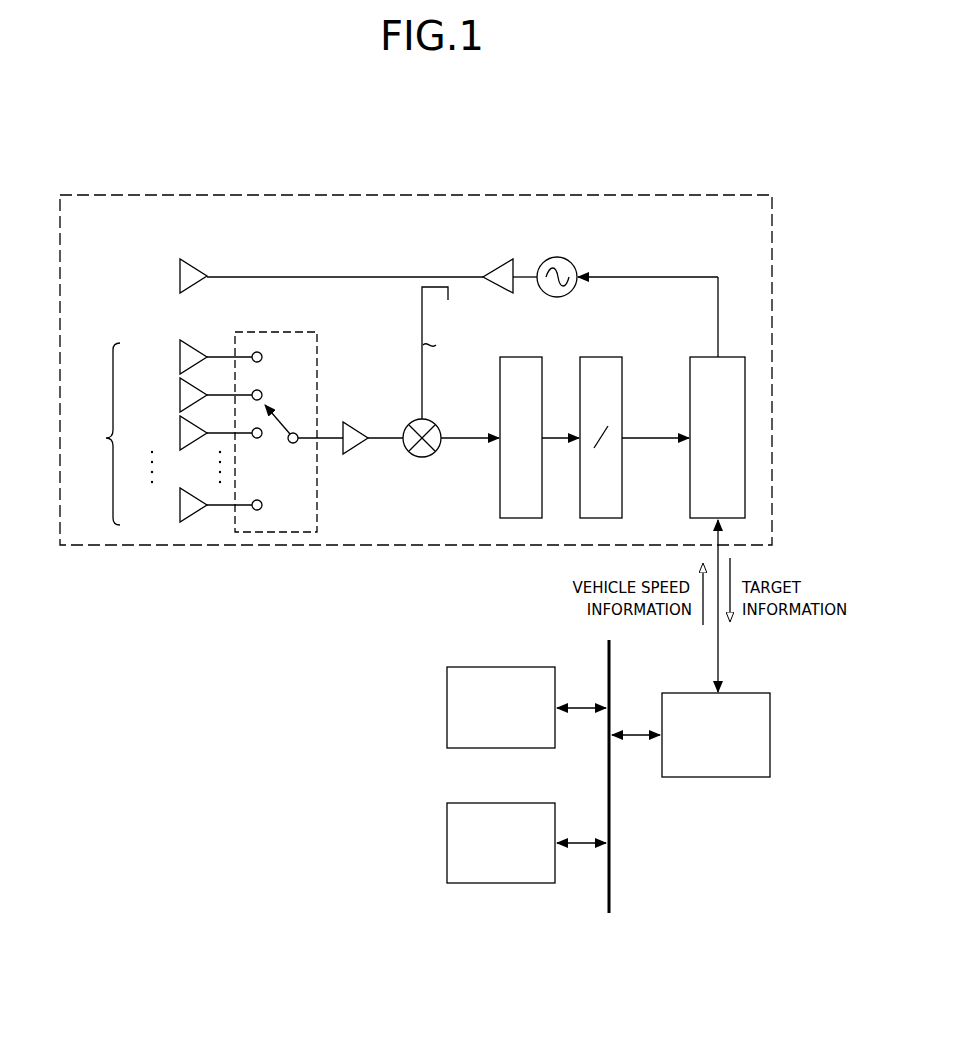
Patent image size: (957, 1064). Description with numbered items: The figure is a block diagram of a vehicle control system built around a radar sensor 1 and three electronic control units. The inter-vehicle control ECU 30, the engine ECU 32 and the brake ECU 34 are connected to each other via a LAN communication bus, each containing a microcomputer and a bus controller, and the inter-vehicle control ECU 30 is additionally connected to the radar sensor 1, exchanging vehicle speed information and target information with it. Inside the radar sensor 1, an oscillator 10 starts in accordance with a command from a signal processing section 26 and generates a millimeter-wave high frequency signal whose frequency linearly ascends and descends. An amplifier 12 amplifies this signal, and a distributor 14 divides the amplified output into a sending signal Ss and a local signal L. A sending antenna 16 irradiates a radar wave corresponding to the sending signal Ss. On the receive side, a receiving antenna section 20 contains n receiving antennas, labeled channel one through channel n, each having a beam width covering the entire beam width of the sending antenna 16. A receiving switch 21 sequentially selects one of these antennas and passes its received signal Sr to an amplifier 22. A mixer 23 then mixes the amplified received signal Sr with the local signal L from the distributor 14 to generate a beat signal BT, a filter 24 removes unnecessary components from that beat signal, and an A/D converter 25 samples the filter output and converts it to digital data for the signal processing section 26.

The radar sensor 1 is at (258, 158).
The oscillator 10 is at (558, 258).
The amplifier 12 is at (506, 260).
The distributor 14 is at (420, 290).
The sending antenna 16 is at (195, 264).
The receiving antenna section 20 is at (163, 432).
The receiving switch 21 is at (270, 330).
The amplifier 22 is at (353, 456).
The mixer 23 is at (422, 458).
The filter 24 is at (514, 356).
The A/D converter 25 is at (594, 356).
The signal processing section 26 is at (739, 356).
The inter-vehicle control ECU 30 is at (748, 690).
The engine ECU 32 is at (474, 666).
The brake ECU 34 is at (474, 802).